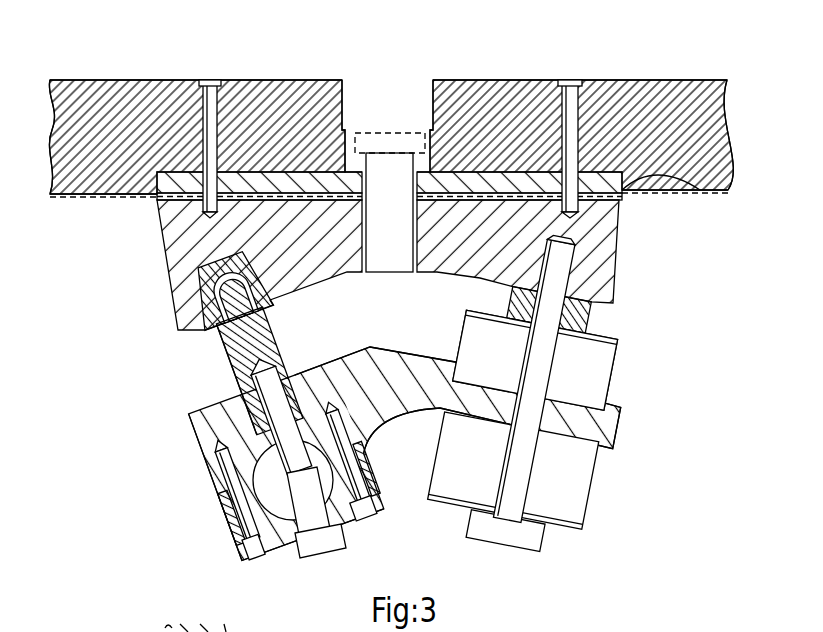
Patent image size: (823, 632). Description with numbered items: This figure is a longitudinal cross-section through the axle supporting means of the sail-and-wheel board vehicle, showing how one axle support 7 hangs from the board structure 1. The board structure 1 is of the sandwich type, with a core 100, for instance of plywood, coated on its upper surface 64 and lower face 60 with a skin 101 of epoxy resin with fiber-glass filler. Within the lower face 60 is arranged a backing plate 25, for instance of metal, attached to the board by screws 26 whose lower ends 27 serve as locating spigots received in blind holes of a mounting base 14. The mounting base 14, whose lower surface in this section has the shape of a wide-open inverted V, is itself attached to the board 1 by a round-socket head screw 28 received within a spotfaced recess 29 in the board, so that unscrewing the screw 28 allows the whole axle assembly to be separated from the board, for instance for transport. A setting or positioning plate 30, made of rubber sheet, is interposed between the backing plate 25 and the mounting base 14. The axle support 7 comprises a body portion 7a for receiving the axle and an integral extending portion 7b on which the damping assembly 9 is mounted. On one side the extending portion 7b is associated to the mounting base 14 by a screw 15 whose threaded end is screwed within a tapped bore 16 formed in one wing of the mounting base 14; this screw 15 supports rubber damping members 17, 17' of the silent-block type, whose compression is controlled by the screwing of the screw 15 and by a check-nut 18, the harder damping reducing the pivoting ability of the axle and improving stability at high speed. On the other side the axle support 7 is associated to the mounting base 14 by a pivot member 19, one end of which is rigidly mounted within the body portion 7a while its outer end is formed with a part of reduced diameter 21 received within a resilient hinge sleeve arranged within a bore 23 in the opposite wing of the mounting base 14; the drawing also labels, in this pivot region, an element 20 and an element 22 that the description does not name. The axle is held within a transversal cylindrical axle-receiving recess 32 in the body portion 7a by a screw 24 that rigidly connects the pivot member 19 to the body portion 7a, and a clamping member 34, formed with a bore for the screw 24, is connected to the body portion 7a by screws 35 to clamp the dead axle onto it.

The carrying board structure 1 is at (742, 124).
The axle support 7 is at (158, 440).
The body portion 7a is at (217, 473).
The extending portion 7b is at (614, 432).
The damping assembly 9 is at (642, 390).
The mounting base 14 is at (613, 263).
The screw 15 is at (510, 517).
The tapped bore 16 is at (578, 278).
The rubber damping member 17 is at (563, 360).
The rubber damping member 17' is at (545, 471).
The check-nut 18 is at (593, 313).
The pivot member 19 is at (236, 347).
The threaded stud 20 is at (268, 367).
The part of reduced diameter 21 is at (272, 330).
The clamp head 22 is at (207, 327).
The bore 23 is at (197, 271).
The screw 24 is at (313, 535).
The backing plate 25 is at (630, 176).
The screws 26 is at (211, 92).
The lower ends 27 is at (157, 212).
The round-socket head screw 28 is at (392, 180).
The spotfaced recess 29 is at (357, 92).
The setting or positioning plate 30 is at (622, 198).
The axle-receiving recess 32 is at (228, 517).
The clamping member 34 is at (275, 542).
The screws 35 is at (363, 513).
The lower face 60 is at (722, 198).
The upper surface 64 is at (662, 72).
The core 100 is at (137, 103).
The skin 101 is at (93, 79).